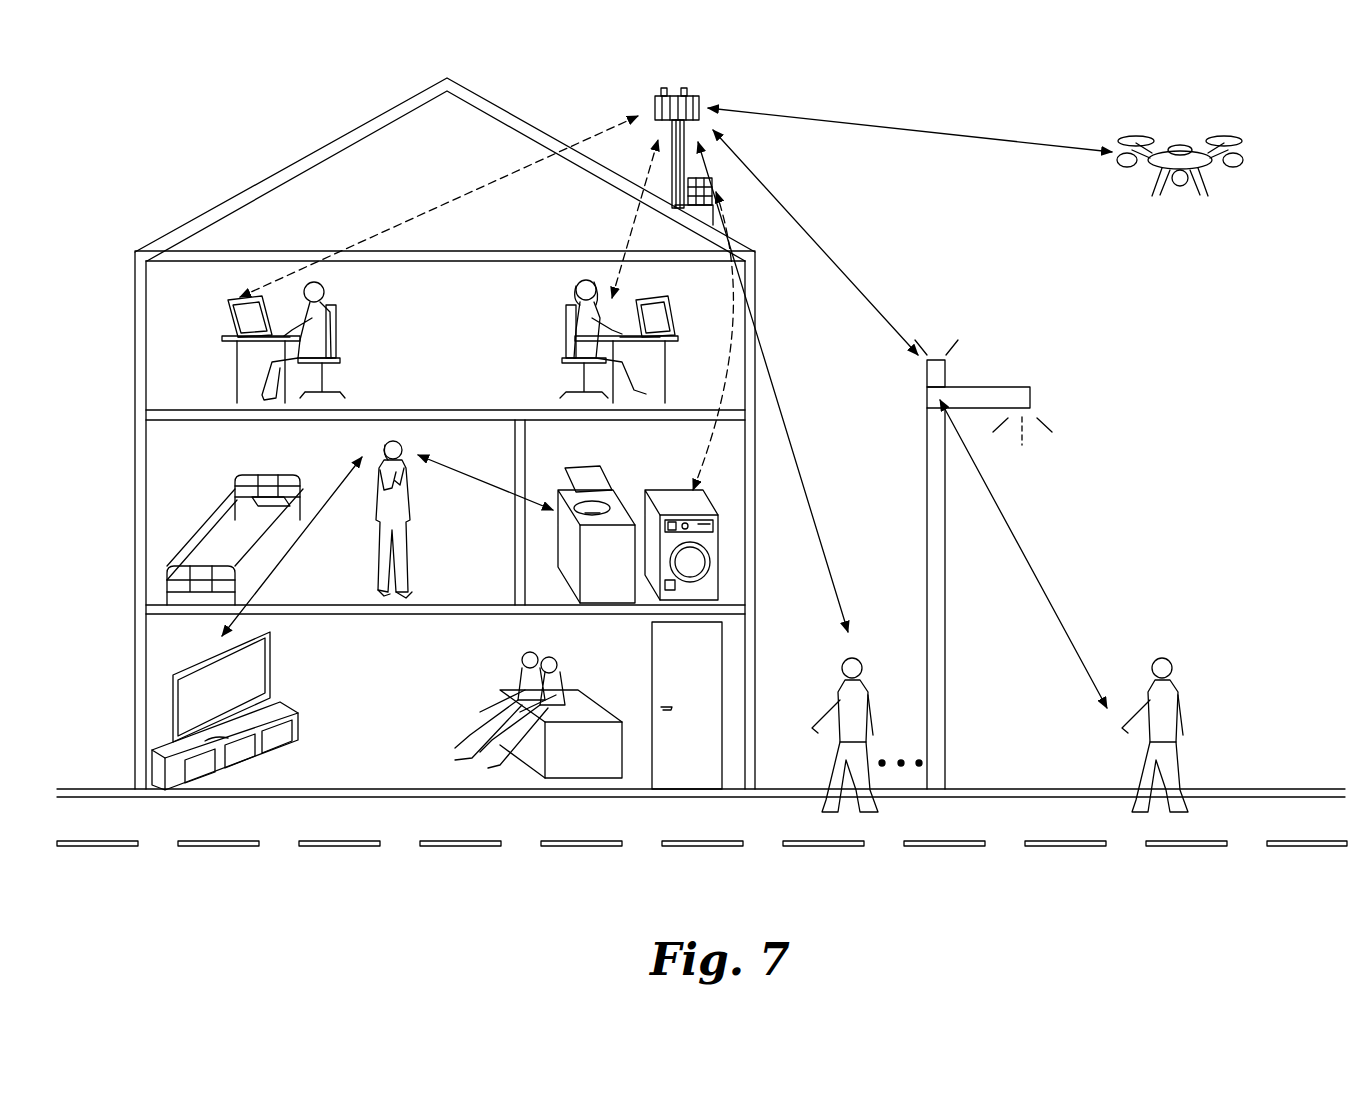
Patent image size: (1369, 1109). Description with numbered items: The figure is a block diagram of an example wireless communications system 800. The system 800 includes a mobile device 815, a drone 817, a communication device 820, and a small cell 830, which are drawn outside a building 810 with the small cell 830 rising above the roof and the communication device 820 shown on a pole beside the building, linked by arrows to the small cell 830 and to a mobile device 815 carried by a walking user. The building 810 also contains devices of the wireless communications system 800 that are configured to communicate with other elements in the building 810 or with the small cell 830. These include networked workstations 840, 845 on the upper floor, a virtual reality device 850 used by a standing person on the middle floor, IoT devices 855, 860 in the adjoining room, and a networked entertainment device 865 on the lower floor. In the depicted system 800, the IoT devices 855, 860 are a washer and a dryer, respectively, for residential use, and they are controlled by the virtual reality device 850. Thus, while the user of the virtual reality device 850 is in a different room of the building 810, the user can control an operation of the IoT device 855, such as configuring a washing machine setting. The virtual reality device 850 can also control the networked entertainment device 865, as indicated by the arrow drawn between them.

The wireless communications system 800 is at (237, 135).
The building 810 is at (178, 225).
The mobile device 815 is at (812, 726).
The drone 817 is at (1210, 138).
The communication device 820 is at (946, 372).
The small cell 830 is at (697, 98).
The networked workstation 840 is at (245, 297).
The networked workstation 845 is at (640, 302).
The virtual reality device 850 is at (392, 440).
The IoT device 855 is at (556, 534).
The IoT device 860 is at (668, 496).
The networked entertainment device 865 is at (272, 660).